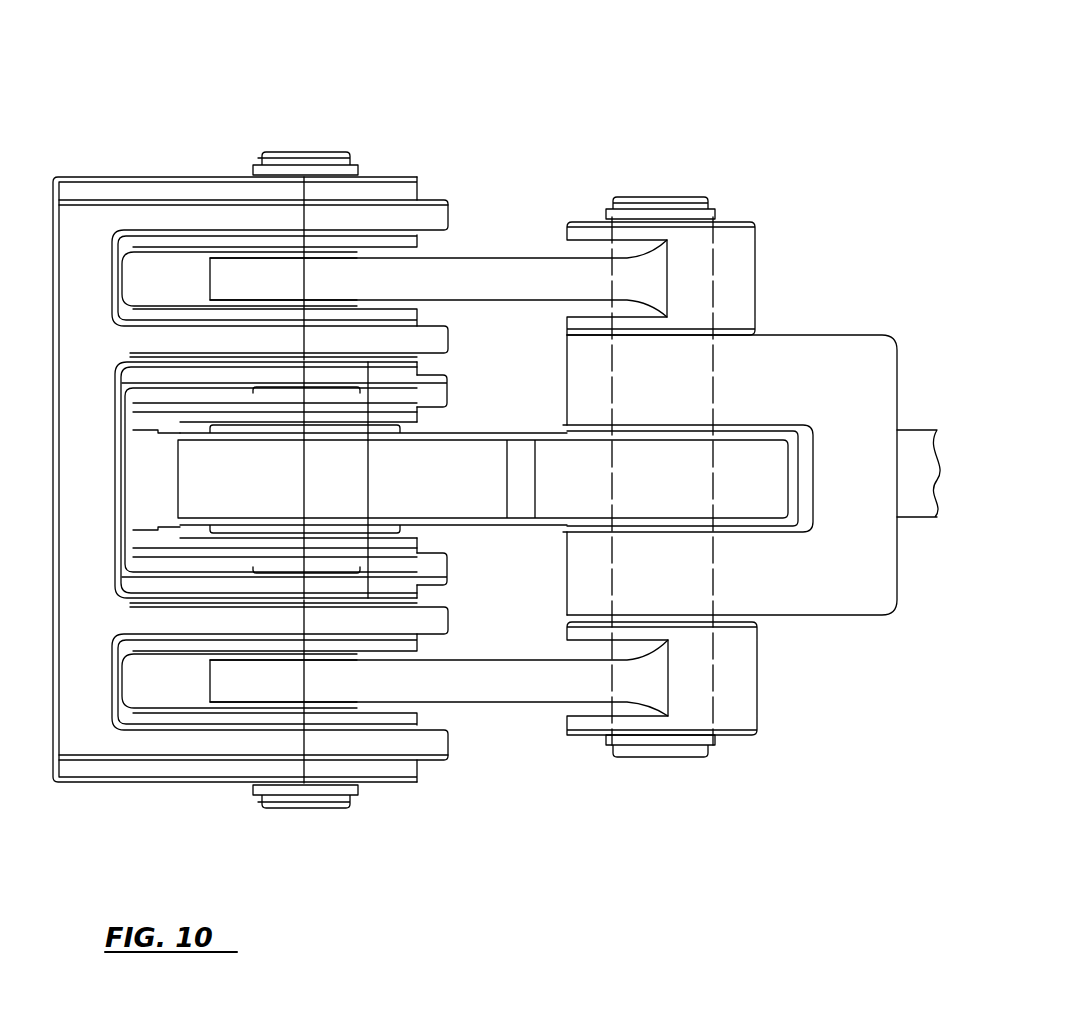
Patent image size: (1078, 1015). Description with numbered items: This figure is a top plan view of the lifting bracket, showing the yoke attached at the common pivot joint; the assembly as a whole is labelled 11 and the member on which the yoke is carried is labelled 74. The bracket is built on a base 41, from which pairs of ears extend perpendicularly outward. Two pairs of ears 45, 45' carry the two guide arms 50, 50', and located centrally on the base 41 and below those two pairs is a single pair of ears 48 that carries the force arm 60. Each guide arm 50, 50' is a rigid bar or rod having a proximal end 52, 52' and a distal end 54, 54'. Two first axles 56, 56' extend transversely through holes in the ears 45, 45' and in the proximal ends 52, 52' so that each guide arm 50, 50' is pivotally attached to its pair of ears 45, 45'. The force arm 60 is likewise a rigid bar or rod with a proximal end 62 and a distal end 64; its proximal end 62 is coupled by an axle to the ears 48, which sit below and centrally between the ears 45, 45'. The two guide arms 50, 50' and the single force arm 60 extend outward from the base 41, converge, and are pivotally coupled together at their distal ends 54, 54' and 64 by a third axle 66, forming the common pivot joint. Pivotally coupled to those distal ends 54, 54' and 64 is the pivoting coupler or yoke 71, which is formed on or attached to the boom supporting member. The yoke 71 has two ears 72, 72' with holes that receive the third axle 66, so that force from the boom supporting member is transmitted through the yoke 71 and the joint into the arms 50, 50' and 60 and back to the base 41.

The valve actuator assembly 11 is at (135, 80).
The base 41 is at (98, 175).
The ear 45' is at (253, 234).
The ear 45 is at (275, 719).
The ear 48 is at (193, 394).
The guide arm 50' is at (438, 248).
The guide arm 50 is at (439, 699).
The proximal end 52' is at (328, 196).
The proximal end 52 is at (270, 749).
The distal end 54' is at (693, 245).
The distal end 54 is at (692, 699).
The first axle 56' is at (305, 214).
The first axle 56 is at (307, 729).
The force arm 60 is at (464, 438).
The proximal end 62 is at (237, 481).
The distal end 64 is at (713, 448).
The third axle 66 is at (667, 195).
The yoke 71 is at (868, 300).
The ear 72' is at (546, 367).
The ear 72 is at (543, 573).
The output shaft 74 is at (917, 427).